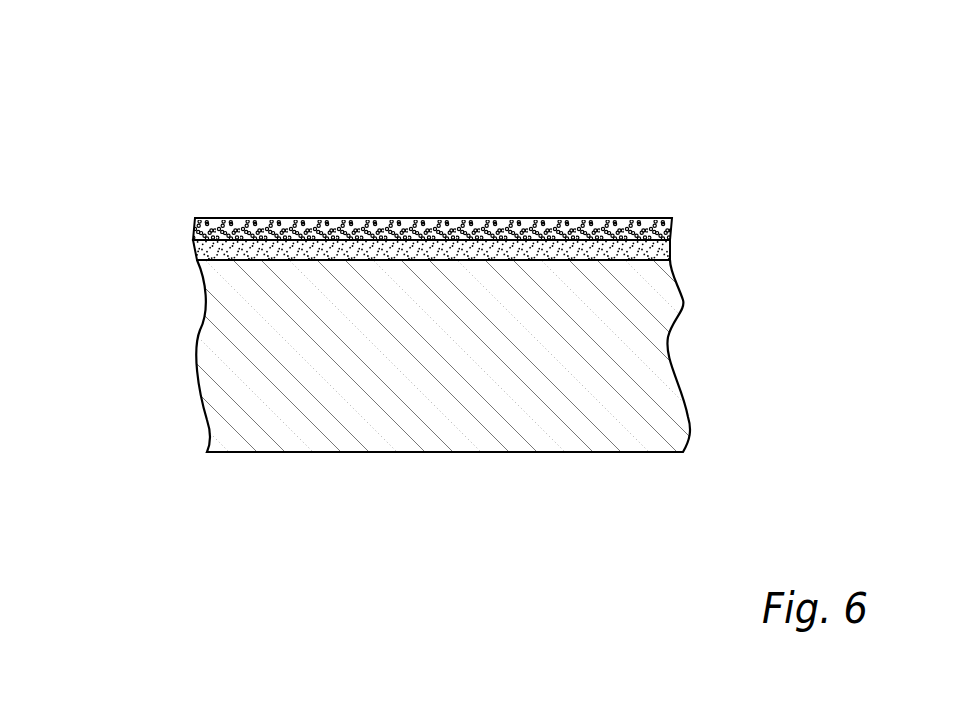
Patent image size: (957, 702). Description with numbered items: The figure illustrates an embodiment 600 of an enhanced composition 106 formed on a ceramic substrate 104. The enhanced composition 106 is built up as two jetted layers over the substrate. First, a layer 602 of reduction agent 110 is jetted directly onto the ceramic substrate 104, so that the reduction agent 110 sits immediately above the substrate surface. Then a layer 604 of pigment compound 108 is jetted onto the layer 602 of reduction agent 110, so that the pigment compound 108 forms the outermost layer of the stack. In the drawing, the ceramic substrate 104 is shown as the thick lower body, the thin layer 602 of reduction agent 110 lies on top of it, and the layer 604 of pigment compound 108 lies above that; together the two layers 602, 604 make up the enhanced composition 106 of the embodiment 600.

The embodiment 600 is at (595, 125).
The ceramic substrate 104 is at (382, 452).
The enhanced composition 106 is at (352, 188).
The pigment compound 108 is at (307, 230).
The reduction agent 110 is at (472, 243).
The layer of pigment compound 604 is at (677, 225).
The layer of reduction agent 602 is at (677, 249).